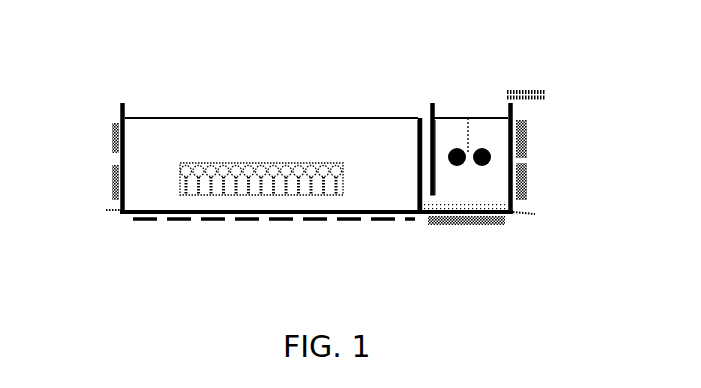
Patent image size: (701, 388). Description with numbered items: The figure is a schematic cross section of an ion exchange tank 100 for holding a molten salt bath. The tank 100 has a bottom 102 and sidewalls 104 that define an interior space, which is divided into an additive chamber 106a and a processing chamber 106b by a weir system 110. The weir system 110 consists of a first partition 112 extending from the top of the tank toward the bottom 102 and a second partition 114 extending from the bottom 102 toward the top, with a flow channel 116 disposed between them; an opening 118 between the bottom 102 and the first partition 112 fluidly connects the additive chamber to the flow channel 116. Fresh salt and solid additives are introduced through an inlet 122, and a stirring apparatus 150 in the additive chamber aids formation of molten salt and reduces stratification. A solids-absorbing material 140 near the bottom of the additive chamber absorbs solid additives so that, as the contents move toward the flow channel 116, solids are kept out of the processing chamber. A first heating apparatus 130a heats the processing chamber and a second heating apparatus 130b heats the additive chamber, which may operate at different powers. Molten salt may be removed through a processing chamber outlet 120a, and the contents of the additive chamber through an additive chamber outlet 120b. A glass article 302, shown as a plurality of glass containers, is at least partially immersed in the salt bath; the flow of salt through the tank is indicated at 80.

The ion exchange tank 100 is at (119, 44).
The bottom 102 is at (130, 215).
The sidewalls 104 is at (119, 107).
The additive chamber 106a is at (261, 97).
The processing chamber 106b is at (491, 101).
The weir system 110 is at (409, 95).
The first partition 112 is at (437, 172).
The second partition 114 is at (417, 134).
The flow channel 116 is at (426, 118).
The opening 118 is at (436, 196).
The inlet 122 is at (511, 90).
The stirring apparatus 150 is at (476, 127).
The first heating apparatus 130a is at (410, 233).
The second heating apparatus 130b is at (538, 125).
The processing chamber outlet 120a is at (105, 212).
The additive chamber outlet 120b is at (558, 239).
The solids-absorbing material 140 is at (427, 215).
The vapor flow 80 is at (157, 176).
The glass article 302 is at (344, 170).